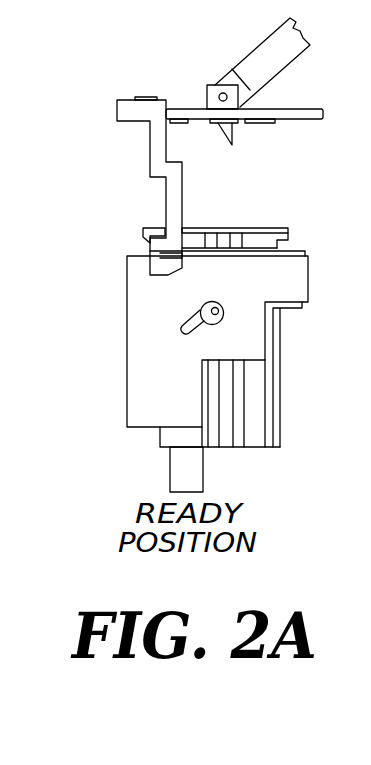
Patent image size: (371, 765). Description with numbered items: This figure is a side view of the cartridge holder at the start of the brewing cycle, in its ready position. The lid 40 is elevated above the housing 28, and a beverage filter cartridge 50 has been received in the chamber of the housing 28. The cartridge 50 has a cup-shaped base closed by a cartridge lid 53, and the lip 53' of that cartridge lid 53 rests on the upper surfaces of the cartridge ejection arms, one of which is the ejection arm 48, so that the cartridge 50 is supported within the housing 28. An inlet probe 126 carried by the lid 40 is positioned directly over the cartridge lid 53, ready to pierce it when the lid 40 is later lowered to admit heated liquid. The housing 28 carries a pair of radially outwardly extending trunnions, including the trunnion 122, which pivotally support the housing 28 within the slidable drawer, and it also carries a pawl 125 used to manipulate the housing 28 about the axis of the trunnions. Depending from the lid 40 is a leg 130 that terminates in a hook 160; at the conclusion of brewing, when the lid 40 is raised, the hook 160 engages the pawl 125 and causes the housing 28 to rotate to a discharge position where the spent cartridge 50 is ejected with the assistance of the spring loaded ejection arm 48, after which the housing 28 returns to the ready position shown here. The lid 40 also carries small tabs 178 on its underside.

The housing 28 is at (289, 275).
The lid 40 is at (309, 109).
The cartridge ejection arm 48 is at (228, 235).
The beverage filter cartridge 50 is at (284, 238).
The cartridge lid 53 is at (253, 211).
The lip 53' is at (186, 216).
The trunnion 122 is at (222, 318).
The pawl 125 is at (200, 309).
The inlet probe 126 is at (235, 134).
The leg 130 is at (172, 199).
The hook 160 is at (197, 263).
The tabs 178 is at (181, 125).